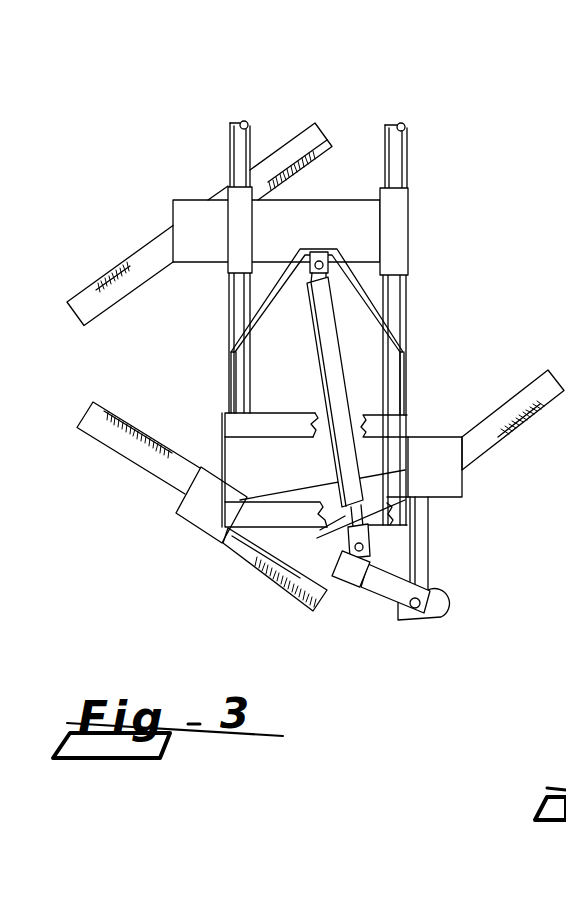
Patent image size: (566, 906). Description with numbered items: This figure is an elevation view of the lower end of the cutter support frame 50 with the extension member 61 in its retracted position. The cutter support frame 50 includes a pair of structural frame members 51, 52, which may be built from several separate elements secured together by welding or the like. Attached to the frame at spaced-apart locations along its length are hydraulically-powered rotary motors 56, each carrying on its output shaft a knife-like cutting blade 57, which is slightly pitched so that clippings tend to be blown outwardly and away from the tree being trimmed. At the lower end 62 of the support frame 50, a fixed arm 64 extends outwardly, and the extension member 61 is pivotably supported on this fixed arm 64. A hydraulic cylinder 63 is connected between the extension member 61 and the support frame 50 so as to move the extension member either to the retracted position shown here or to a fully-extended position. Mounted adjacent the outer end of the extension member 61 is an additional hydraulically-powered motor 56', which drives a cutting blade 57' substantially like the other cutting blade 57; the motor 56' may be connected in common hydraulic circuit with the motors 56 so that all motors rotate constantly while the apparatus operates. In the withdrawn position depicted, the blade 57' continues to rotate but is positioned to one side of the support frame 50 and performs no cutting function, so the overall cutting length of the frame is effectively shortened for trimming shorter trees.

The cutter support frame 50 is at (126, 150).
The structural frame member 51 is at (228, 150).
The structural frame member 52 is at (402, 160).
The hydraulically-powered rotary motor 56 is at (308, 364).
The additional hydraulically-powered motor 56' is at (208, 526).
The cutting blade 57 is at (314, 296).
The cutting blade 57' is at (138, 465).
The extension member 61 is at (373, 583).
The lower end 62 is at (258, 517).
The hydraulic cylinder 63 is at (327, 352).
The fixed arm 64 is at (420, 568).